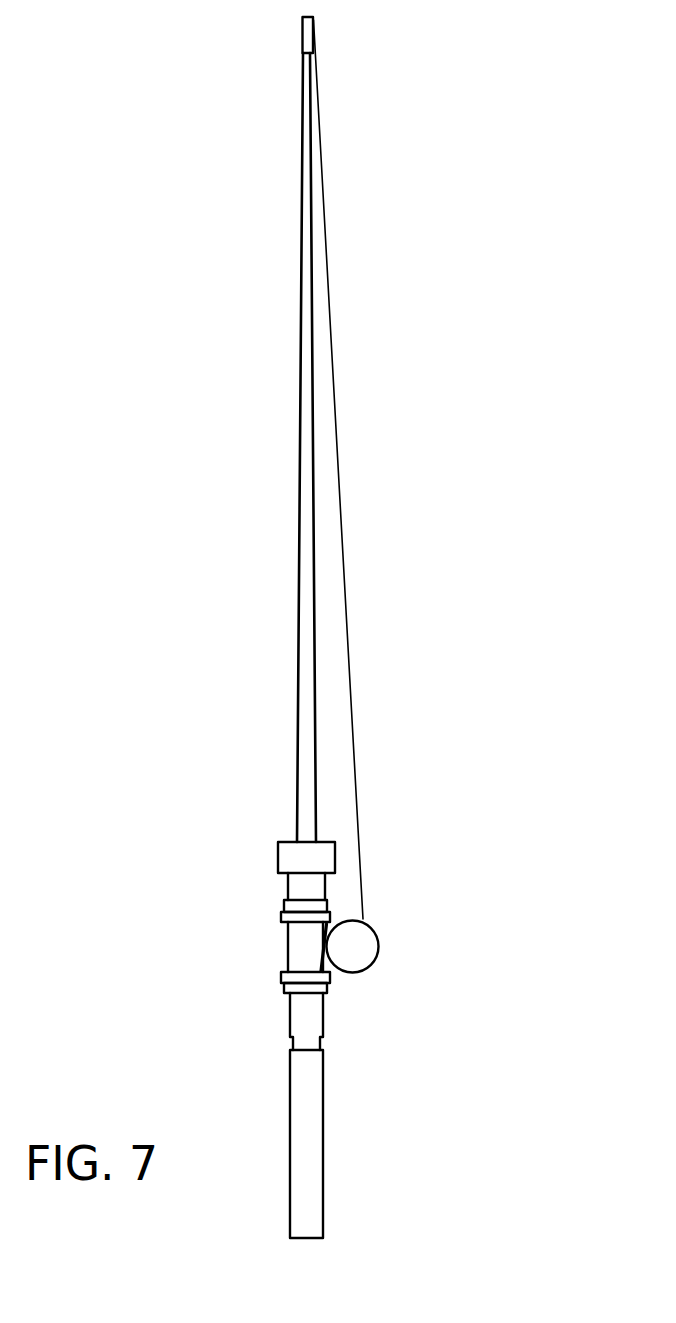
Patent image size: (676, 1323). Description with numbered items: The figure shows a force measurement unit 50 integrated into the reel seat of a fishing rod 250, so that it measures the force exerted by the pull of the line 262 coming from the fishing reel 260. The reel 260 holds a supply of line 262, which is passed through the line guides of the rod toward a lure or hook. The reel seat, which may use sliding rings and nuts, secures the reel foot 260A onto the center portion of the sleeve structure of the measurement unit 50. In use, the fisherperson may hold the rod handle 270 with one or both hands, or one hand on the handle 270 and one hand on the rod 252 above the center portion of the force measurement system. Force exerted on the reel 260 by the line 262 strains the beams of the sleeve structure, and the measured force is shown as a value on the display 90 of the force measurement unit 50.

The fishing rod 250 is at (433, 594).
The rod 252 is at (293, 641).
The line 262 is at (365, 862).
The display 90 is at (278, 856).
The force measurement unit 50 is at (288, 943).
The fishing reel 260 is at (367, 947).
The reel foot 260A is at (330, 924).
The rod handle 270 is at (328, 1132).